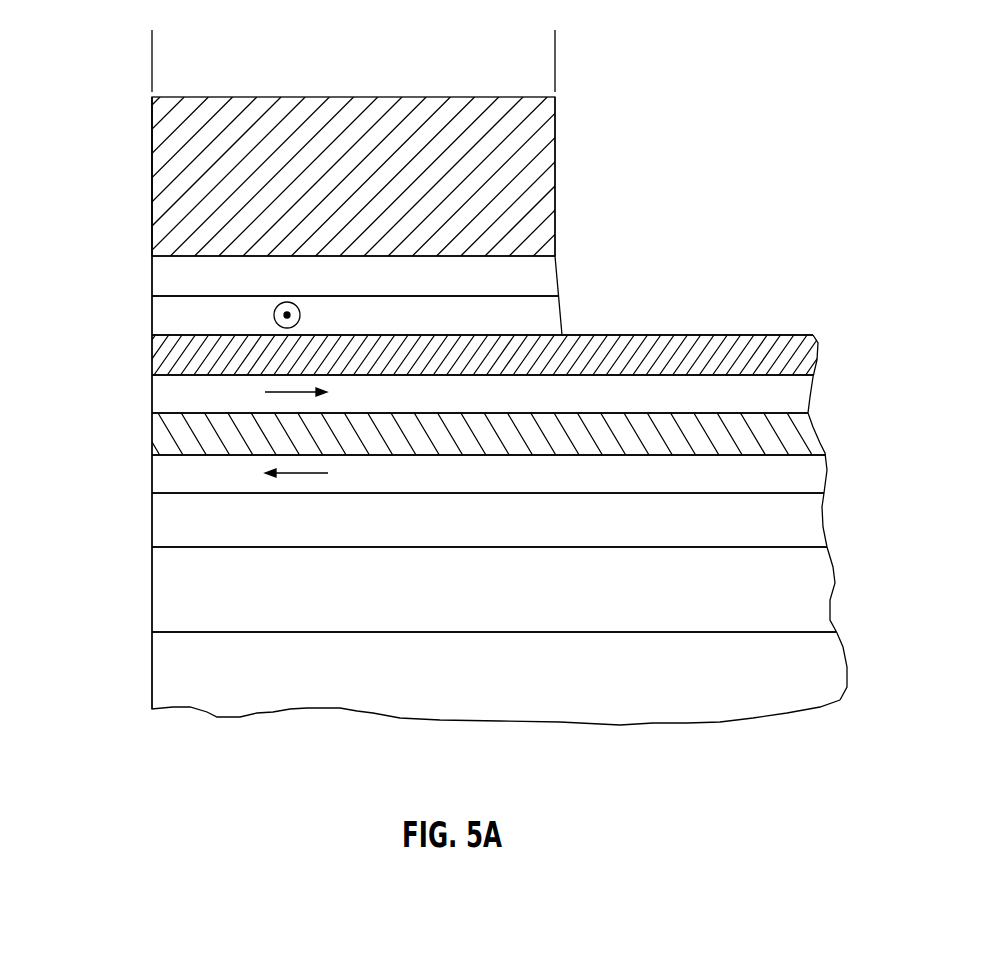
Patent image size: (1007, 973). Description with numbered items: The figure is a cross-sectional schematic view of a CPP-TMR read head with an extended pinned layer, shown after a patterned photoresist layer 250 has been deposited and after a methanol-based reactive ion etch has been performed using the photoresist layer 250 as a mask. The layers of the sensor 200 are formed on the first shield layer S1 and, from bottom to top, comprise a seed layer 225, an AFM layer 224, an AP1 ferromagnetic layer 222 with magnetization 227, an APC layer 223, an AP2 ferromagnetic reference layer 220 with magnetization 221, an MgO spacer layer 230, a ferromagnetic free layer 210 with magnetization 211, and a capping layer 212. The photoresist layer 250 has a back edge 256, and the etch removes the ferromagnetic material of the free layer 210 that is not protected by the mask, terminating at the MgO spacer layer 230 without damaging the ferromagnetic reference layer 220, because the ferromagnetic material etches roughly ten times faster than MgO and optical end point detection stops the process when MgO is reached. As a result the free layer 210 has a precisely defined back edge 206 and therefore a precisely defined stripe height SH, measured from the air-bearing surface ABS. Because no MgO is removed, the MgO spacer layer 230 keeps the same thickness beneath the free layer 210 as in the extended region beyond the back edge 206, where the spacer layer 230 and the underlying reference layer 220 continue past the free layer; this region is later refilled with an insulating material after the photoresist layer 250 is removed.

The sensor 200 is at (92, 255).
The patterned photoresist layer 250 is at (530, 162).
The back edge 256 is at (555, 210).
The back edge 206 is at (560, 334).
The capping layer 212 is at (458, 287).
The ferromagnetic free layer 210 is at (458, 327).
The magnetization 211 is at (287, 300).
The MgO spacer layer 230 is at (458, 368).
The AP2 ferromagnetic reference layer 220 is at (458, 407).
The magnetization 221 is at (287, 391).
The APC layer 223 is at (458, 446).
The magnetization 227 is at (287, 472).
The AP1 ferromagnetic layer 222 is at (458, 486).
The AFM layer 224 is at (458, 530).
The seed layer 225 is at (458, 600).
The first shield layer S1 is at (651, 712).
The air-bearing surface ABS is at (163, 613).
The stripe height SH is at (555, 43).